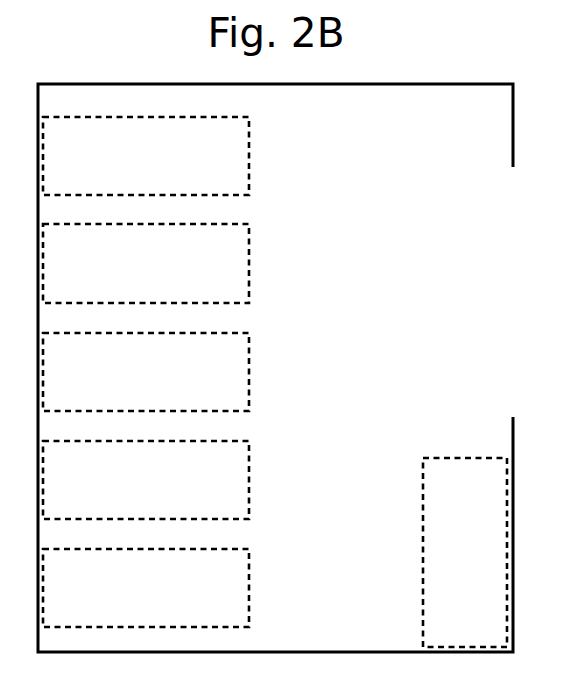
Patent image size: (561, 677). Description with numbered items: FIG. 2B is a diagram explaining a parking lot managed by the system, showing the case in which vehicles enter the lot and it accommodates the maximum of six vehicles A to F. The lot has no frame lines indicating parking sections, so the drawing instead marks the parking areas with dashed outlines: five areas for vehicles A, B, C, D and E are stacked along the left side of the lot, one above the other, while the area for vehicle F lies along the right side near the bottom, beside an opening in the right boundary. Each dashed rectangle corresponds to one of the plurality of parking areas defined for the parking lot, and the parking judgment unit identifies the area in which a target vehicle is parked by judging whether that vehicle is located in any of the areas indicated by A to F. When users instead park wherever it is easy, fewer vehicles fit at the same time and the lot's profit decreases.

The vehicle A is at (146, 156).
The vehicle B is at (146, 263).
The vehicle C is at (146, 372).
The vehicle D is at (146, 480).
The vehicle E is at (146, 588).
The vehicle F is at (465, 552).